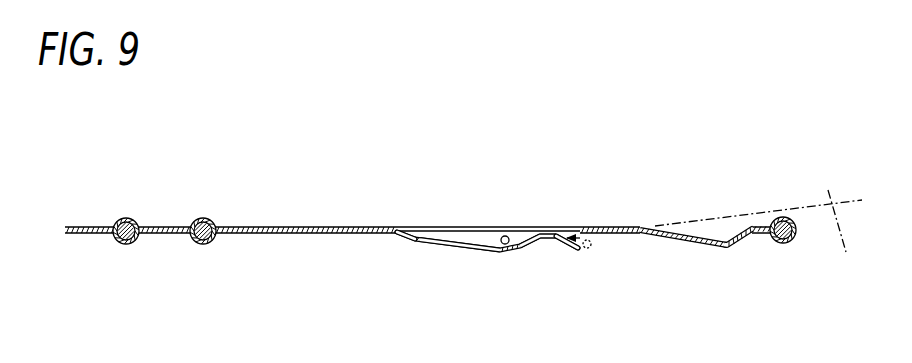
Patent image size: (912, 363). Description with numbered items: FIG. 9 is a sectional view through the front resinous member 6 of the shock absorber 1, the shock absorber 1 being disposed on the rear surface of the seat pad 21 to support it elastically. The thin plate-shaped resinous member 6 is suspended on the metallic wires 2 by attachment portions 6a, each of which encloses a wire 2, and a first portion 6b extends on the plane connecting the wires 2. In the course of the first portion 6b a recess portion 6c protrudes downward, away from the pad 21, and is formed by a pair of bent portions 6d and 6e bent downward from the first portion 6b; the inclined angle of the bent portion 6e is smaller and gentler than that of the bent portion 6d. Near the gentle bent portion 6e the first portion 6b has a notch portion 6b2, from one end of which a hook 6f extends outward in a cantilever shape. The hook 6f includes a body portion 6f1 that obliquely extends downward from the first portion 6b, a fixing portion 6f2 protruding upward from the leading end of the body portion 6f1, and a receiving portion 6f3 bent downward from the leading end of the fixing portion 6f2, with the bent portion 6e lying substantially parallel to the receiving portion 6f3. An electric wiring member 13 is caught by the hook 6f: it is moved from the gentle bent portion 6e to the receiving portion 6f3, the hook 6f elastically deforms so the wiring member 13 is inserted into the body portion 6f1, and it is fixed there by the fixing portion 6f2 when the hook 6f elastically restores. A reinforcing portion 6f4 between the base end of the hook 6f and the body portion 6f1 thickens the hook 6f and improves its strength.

The shock absorber 1 is at (365, 143).
The wire 2 is at (117, 242).
The resinous member 6 is at (320, 183).
The attachment portion 6a is at (118, 219).
The first portion 6b is at (167, 236).
The notch portion 6b2 is at (410, 226).
The recess portion 6c is at (702, 224).
The bent portion 6d is at (748, 247).
The bent portion 6e is at (638, 236).
The hook 6f is at (447, 253).
The body portion 6f1 is at (478, 252).
The fixing portion 6f2 is at (538, 242).
The receiving portion 6f3 is at (563, 253).
The reinforcing portion 6f4 is at (395, 237).
The electric wiring member 13 is at (578, 233).
The pad 21 is at (761, 238).